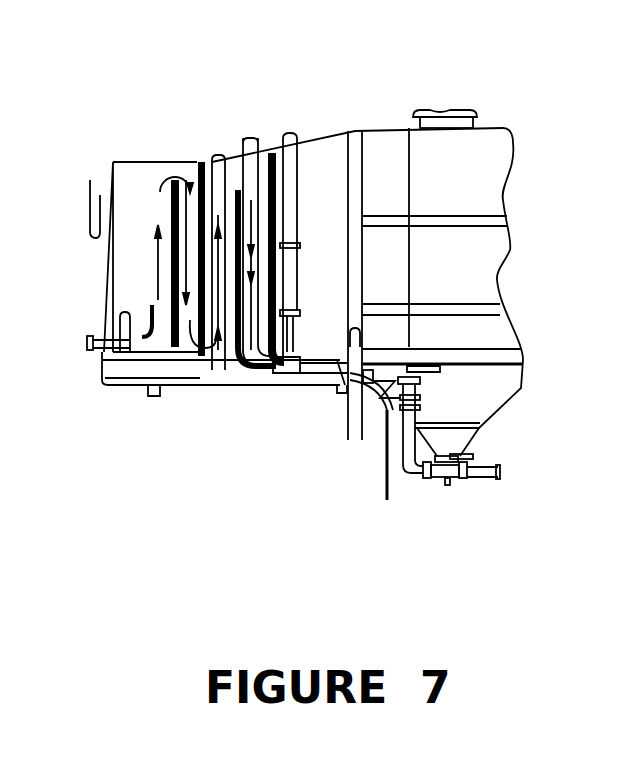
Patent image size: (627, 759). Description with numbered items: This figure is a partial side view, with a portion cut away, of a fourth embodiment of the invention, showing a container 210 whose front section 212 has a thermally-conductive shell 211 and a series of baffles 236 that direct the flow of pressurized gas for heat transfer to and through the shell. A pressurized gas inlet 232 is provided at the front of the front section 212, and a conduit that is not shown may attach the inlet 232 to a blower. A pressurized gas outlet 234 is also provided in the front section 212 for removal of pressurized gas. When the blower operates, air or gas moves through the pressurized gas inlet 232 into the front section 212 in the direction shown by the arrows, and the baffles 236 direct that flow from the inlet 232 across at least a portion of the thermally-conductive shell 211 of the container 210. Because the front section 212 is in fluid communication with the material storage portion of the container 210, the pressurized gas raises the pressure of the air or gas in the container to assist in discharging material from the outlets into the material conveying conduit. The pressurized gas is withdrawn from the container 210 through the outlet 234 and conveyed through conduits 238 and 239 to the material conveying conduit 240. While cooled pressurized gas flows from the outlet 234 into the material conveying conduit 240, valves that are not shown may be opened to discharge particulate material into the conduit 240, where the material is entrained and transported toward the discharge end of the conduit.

The container 210 is at (496, 110).
The thermally-conductive shell 211 is at (140, 172).
The front section 212 is at (347, 97).
The pressurized gas inlet 232 is at (152, 305).
The pressurized gas outlet 234 is at (258, 114).
The baffles 236 is at (172, 213).
The conduit 238 is at (250, 312).
The conduit 239 is at (405, 444).
The material conveying conduit 240 is at (486, 472).